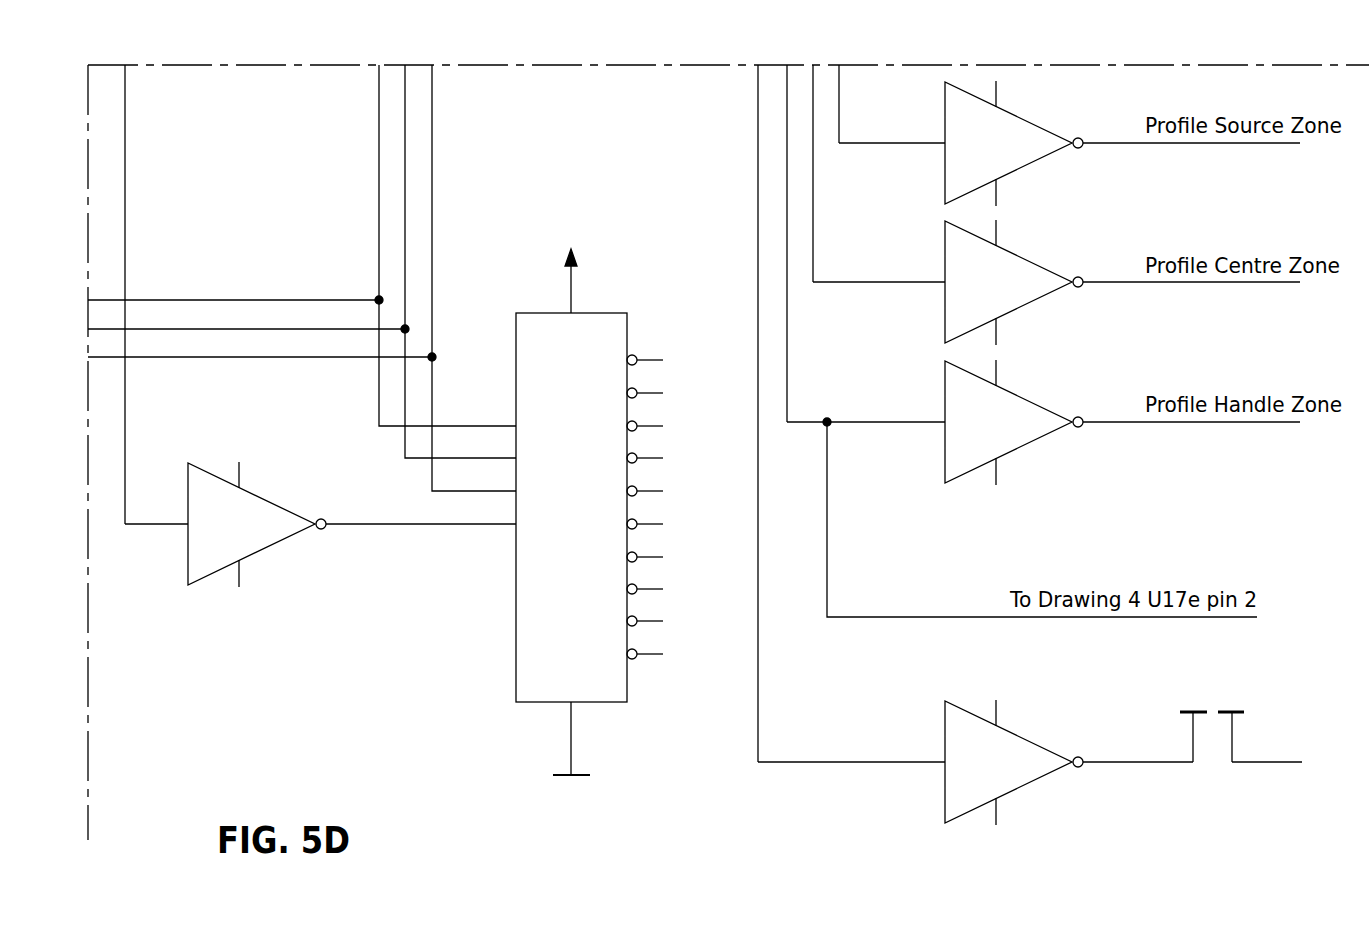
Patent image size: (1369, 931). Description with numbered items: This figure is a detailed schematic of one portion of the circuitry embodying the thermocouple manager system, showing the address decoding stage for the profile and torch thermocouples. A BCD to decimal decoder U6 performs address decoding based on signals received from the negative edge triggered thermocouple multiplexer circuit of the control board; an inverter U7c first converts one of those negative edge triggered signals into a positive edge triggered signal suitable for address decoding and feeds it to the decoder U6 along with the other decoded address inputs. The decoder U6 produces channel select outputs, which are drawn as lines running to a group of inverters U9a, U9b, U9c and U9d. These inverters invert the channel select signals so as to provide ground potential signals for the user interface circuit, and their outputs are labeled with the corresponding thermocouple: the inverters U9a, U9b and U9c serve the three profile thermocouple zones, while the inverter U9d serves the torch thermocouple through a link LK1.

The BCD to decimal decoder U6 is at (573, 513).
The inverter U7c is at (320, 529).
The inverter U9a is at (1043, 427).
The inverter U9b is at (1056, 287).
The inverter U9c is at (1069, 148).
The inverter U9d is at (975, 767).
The link LK1 is at (1261, 756).